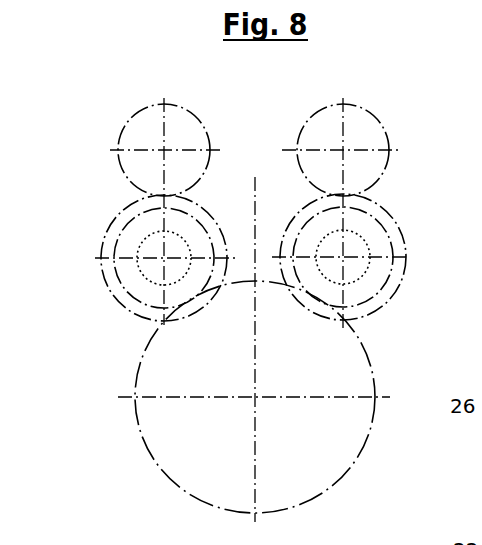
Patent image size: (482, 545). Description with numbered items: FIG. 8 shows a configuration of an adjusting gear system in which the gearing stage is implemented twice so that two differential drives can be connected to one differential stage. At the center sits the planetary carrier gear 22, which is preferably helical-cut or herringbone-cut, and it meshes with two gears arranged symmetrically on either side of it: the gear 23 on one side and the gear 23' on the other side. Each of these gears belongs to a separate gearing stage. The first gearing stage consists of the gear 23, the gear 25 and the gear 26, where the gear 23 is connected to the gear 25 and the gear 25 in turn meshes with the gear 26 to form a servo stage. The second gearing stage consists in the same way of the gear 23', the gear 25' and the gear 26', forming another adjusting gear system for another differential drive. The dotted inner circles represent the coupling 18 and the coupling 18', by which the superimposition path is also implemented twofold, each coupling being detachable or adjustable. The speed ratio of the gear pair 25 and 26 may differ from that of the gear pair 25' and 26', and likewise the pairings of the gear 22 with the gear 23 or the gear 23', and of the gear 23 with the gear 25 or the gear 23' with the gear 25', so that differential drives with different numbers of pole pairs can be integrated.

The gear 26' is at (190, 139).
The gear 26 is at (364, 140).
The gear 23' is at (117, 258).
The gear 23 is at (379, 257).
The gear 25' is at (123, 258).
The gear 25 is at (373, 257).
The coupling 18' is at (105, 296).
The coupling 18 is at (391, 297).
The planetary carrier gear 22 is at (200, 495).